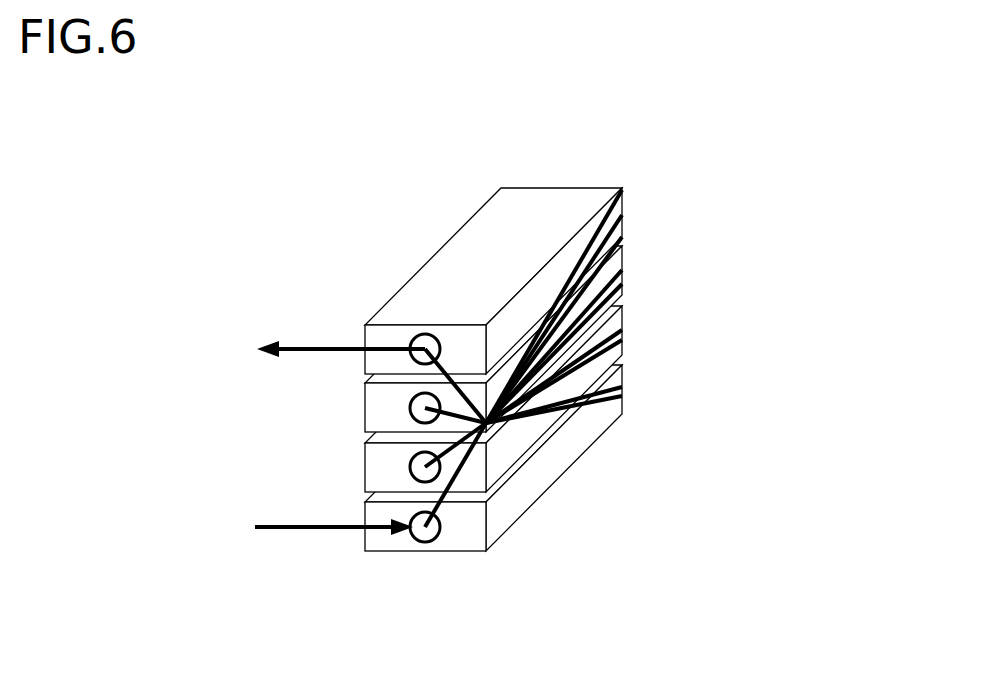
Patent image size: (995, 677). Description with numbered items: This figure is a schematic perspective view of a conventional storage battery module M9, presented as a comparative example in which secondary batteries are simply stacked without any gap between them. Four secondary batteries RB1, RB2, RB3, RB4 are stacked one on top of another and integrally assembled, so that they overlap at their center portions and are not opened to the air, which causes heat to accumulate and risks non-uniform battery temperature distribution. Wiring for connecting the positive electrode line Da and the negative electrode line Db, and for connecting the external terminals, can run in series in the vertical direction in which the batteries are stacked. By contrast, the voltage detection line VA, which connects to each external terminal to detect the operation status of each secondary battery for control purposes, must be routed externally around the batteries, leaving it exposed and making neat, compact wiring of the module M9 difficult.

The storage battery module M9 is at (582, 318).
The secondary battery RB1 is at (617, 406).
The secondary battery RB2 is at (617, 348).
The secondary battery RB3 is at (617, 290).
The secondary battery RB4 is at (617, 231).
The voltage detection line VA is at (460, 473).
The positive electrode line Da is at (313, 523).
The negative electrode line Db is at (319, 349).